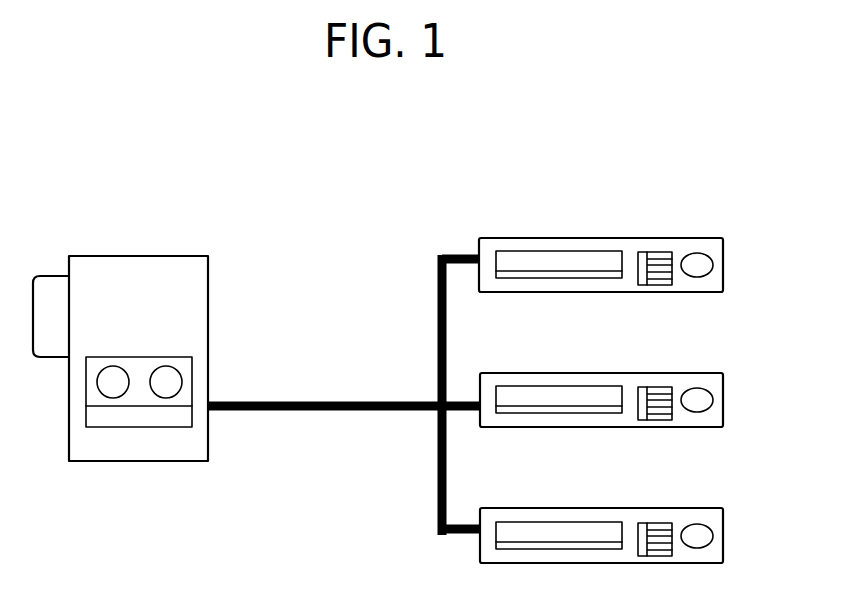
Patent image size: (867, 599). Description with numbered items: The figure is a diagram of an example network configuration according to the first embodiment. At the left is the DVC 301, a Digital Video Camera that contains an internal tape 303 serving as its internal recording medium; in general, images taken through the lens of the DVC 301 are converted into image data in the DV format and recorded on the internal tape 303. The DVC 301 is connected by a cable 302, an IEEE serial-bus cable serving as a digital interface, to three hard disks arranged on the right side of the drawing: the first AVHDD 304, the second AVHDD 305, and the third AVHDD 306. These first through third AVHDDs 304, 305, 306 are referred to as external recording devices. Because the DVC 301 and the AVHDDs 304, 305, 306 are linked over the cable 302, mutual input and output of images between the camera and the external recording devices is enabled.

The DVC 301 is at (152, 256).
The IEEE 1394 cable 302 is at (292, 401).
The internal tape 303 is at (151, 427).
The first AVHDD 304 is at (723, 264).
The second AVHDD 305 is at (723, 399).
The third AVHDD 306 is at (723, 535).